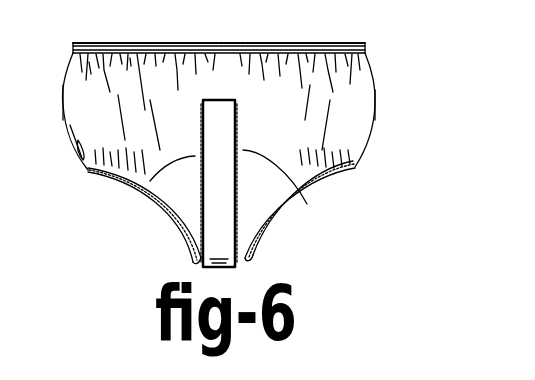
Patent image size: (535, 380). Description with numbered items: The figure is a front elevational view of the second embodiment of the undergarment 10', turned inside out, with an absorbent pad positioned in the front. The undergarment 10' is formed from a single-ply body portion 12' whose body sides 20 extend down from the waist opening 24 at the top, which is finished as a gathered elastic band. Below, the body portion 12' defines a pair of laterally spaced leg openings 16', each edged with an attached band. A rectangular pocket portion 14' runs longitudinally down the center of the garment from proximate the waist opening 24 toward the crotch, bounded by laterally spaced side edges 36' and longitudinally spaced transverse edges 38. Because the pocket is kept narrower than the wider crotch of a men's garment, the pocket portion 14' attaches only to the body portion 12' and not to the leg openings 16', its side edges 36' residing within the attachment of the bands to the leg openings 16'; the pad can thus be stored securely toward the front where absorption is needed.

The undergarment 10' is at (194, 111).
The body portion 12' is at (251, 114).
The pocket portion 14' is at (220, 209).
The leg openings 16' is at (221, 216).
The body sides 20 is at (63, 96).
The waist opening 24 is at (366, 44).
The side edges 36' is at (229, 199).
The transverse edges 38 is at (213, 99).